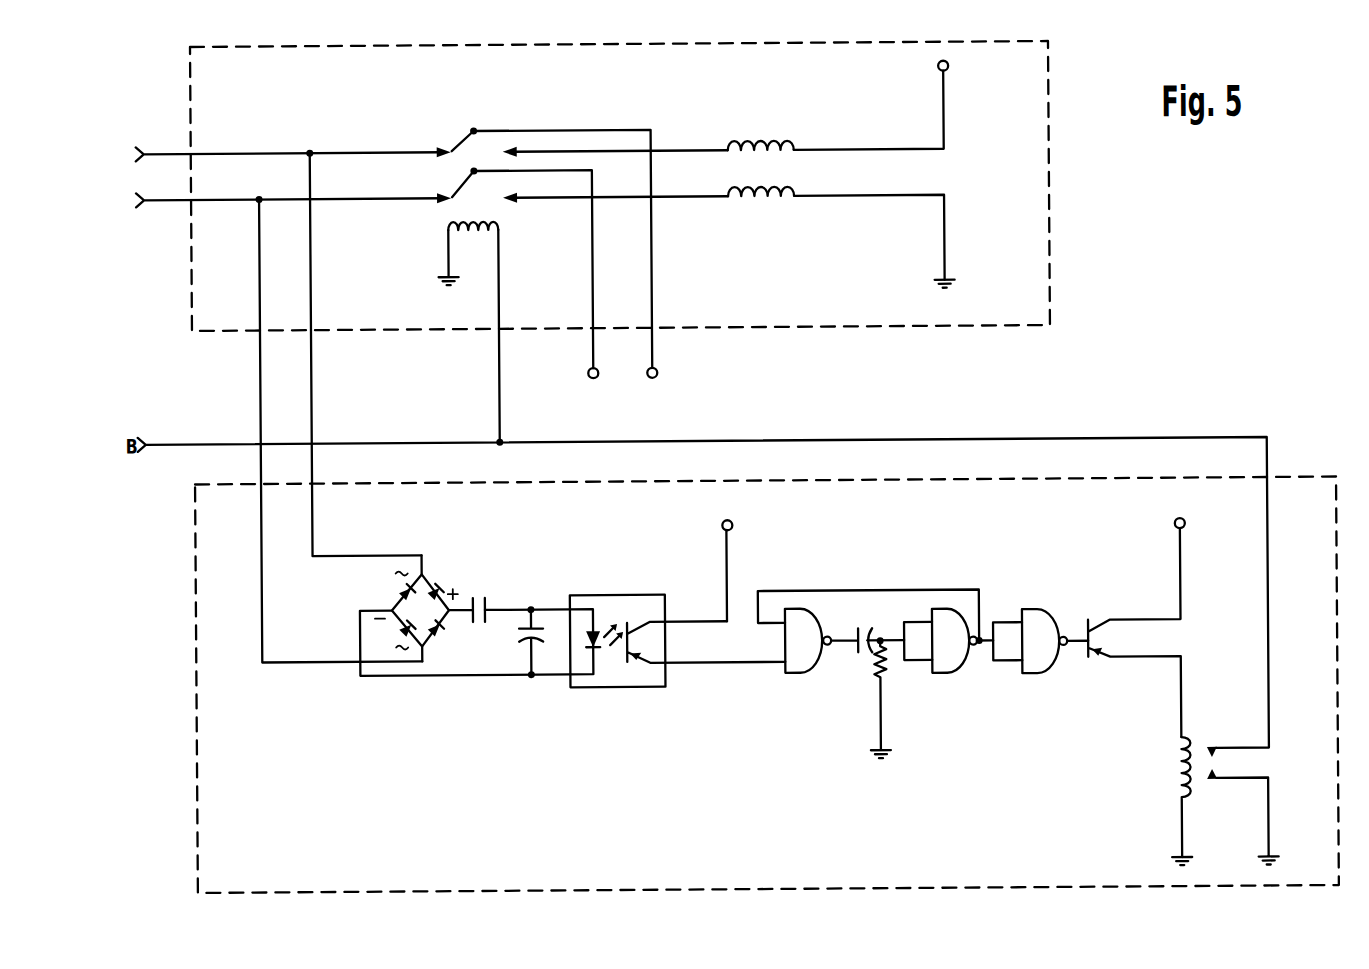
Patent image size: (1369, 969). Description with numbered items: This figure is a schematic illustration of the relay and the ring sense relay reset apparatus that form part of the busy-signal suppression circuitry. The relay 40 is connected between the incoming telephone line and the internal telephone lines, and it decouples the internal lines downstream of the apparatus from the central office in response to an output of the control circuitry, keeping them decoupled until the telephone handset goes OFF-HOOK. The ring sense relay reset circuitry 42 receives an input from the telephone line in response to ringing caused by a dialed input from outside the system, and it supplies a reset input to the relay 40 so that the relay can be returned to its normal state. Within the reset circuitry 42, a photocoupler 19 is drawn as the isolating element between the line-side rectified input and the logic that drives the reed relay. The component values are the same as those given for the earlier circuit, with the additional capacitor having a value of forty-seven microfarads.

The relay 40 is at (1048, 176).
The ring sense relay reset circuitry 42 is at (1333, 484).
The photocoupler 19 is at (678, 622).